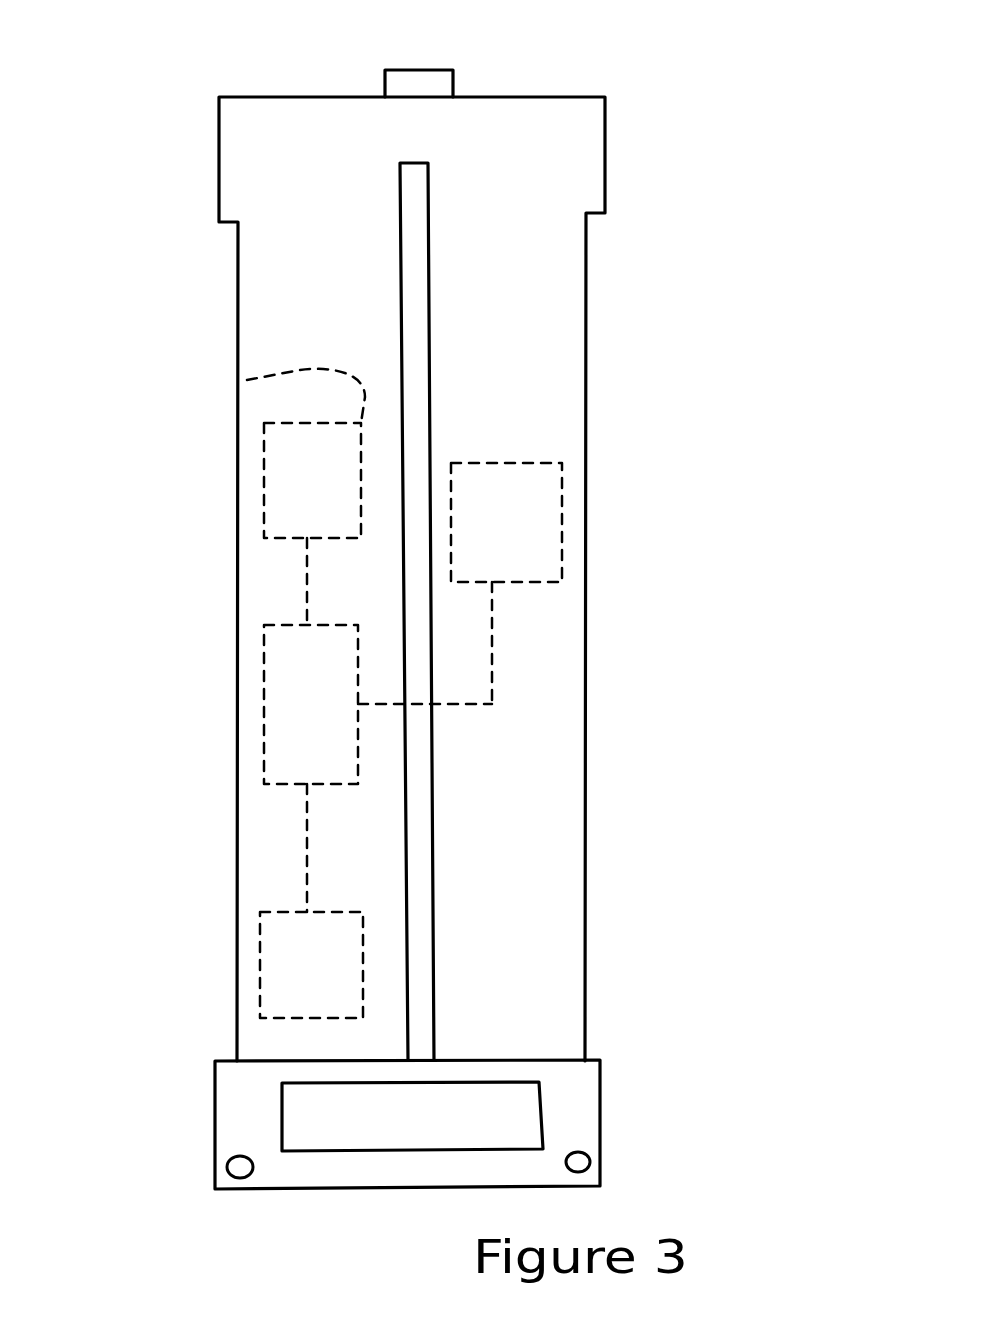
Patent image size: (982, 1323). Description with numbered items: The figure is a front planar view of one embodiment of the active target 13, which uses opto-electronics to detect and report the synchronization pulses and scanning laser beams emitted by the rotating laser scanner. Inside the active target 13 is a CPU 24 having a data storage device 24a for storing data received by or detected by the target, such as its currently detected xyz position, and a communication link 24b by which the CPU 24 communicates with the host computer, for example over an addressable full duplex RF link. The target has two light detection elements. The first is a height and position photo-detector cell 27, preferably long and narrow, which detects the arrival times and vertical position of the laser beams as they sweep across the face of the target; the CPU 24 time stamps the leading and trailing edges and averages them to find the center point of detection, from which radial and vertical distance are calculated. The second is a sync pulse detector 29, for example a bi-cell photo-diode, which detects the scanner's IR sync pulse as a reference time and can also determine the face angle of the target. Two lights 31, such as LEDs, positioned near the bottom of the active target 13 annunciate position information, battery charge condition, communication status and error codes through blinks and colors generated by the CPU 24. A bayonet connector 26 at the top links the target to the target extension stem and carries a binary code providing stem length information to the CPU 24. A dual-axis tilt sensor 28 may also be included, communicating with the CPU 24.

The active target 13 is at (585, 345).
The CPU 24 is at (264, 705).
The data storage device 24a is at (247, 380).
The communication link 24b is at (258, 962).
The bayonet connector 26 is at (440, 77).
The height and position photo-detector cell 27 is at (433, 755).
The dual-axis tilt sensor 28 is at (567, 512).
The sync pulse detector 29 is at (527, 1107).
The lights 31 is at (226, 1167).